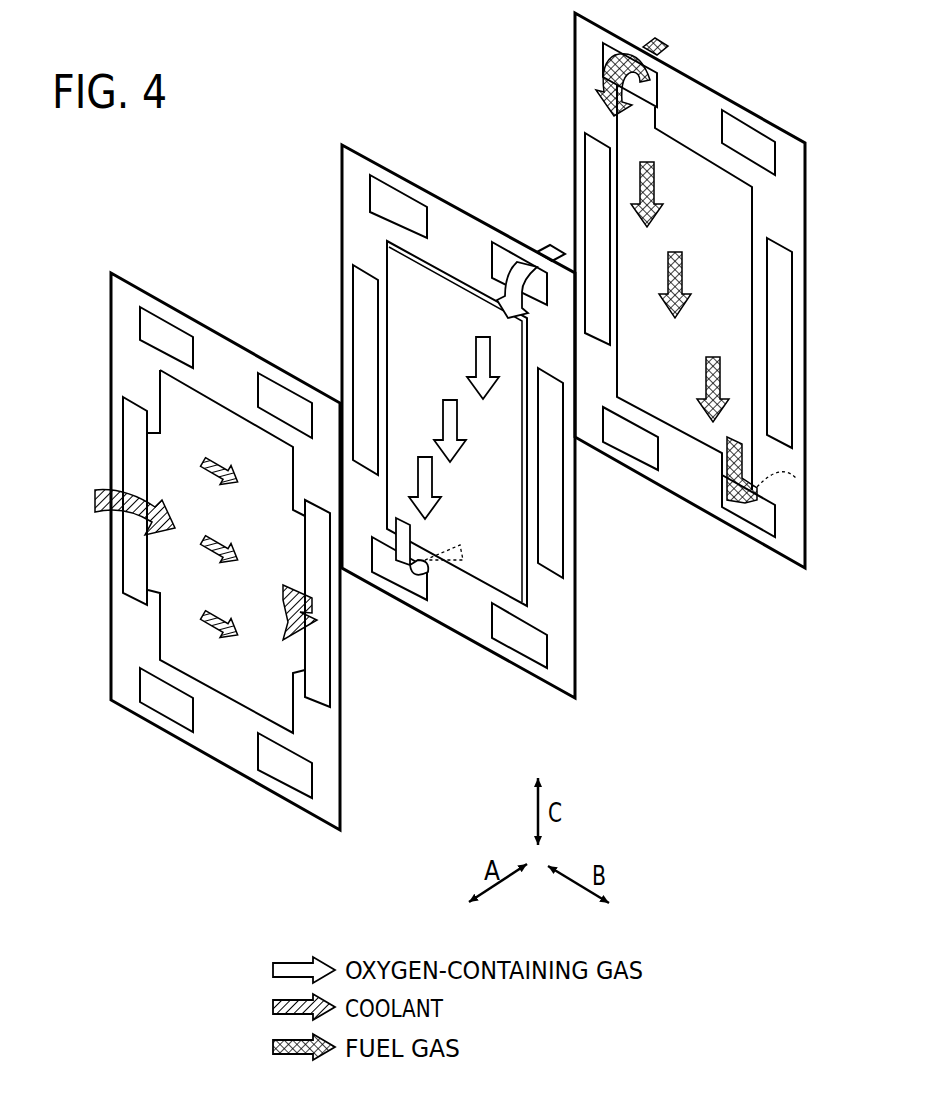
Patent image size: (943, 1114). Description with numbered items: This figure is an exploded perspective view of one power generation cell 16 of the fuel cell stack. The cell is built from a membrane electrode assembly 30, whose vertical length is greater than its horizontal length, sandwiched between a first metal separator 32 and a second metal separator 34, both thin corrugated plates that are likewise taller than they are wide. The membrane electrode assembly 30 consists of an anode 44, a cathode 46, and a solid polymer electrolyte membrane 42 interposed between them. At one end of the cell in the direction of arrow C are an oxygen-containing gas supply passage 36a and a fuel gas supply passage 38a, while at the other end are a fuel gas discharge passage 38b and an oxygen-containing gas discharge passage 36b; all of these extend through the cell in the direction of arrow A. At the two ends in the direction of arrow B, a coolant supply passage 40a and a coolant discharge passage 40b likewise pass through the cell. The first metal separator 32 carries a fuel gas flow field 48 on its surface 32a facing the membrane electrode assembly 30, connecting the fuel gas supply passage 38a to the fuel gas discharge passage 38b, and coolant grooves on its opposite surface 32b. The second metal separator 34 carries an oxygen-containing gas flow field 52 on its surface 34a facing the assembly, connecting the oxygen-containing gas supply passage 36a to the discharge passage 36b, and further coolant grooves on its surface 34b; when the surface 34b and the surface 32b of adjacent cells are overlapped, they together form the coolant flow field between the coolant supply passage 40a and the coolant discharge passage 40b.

The power generation cell 16 is at (158, 165).
The membrane electrode assembly 30 is at (340, 143).
The first metal separator 32 is at (573, 46).
The surface of first metal separator 32a is at (685, 487).
The surface of first metal separator 32b is at (642, 470).
The second metal separator 34 is at (109, 271).
The surface of second metal separator 34a is at (178, 738).
The surface of second metal separator 34b is at (220, 748).
The oxygen-containing gas supply passage 36a is at (287, 407).
The oxygen-containing gas discharge passage 36b is at (153, 692).
The fuel gas supply passage 38a is at (155, 335).
The fuel gas discharge passage 38b is at (302, 778).
The coolant supply passage 40a is at (135, 560).
The coolant discharge passage 40b is at (322, 688).
The solid polymer electrolyte membrane 42 is at (448, 610).
The anode 44 is at (463, 303).
The cathode 46 is at (423, 280).
The fuel gas flow field 48 is at (655, 145).
The oxygen-containing gas flow field 52 is at (222, 417).